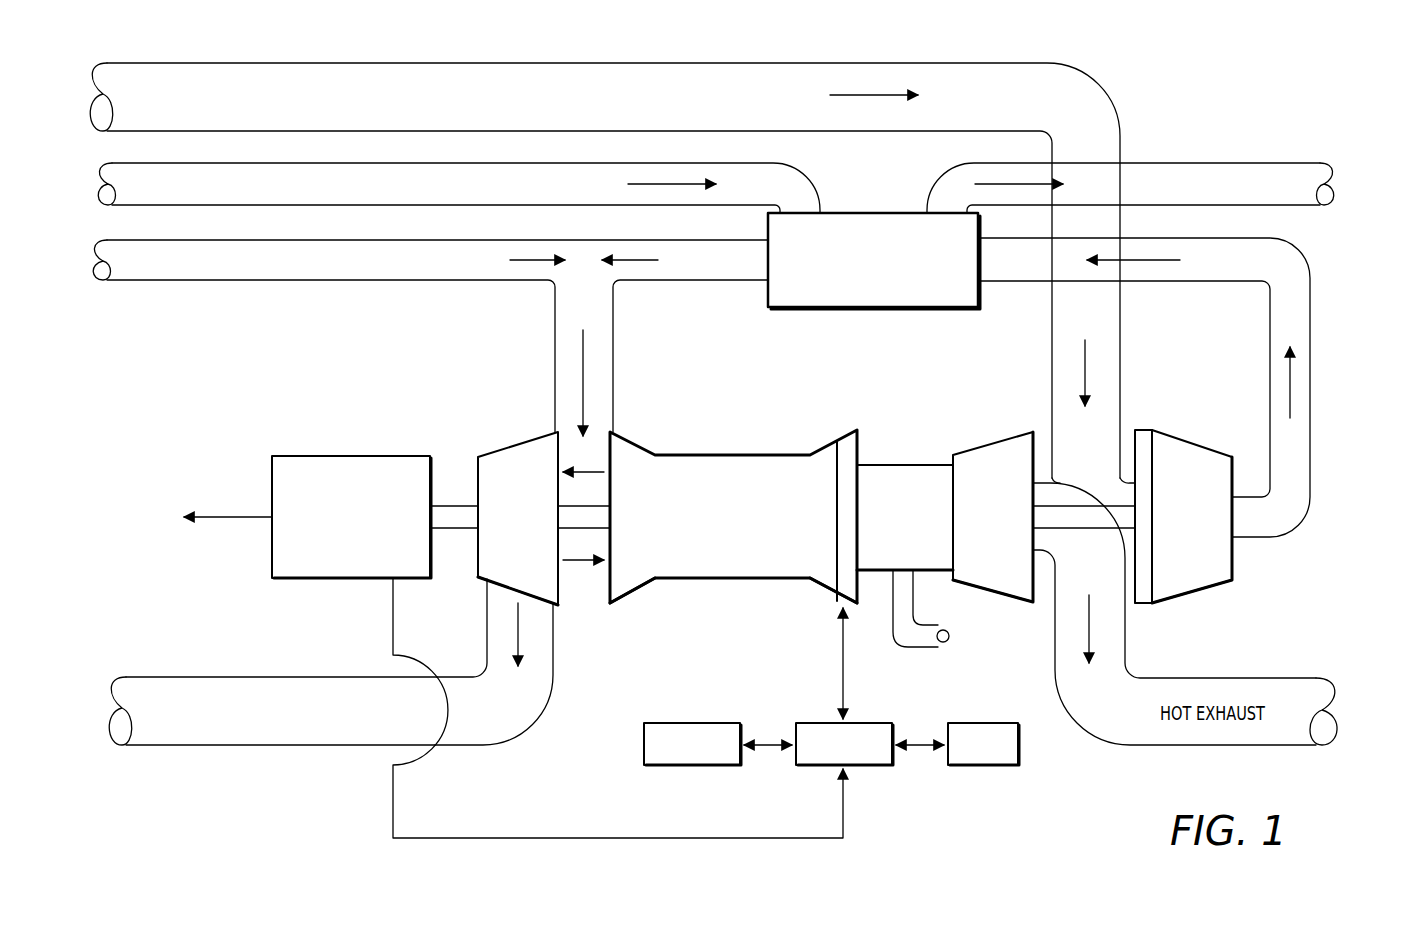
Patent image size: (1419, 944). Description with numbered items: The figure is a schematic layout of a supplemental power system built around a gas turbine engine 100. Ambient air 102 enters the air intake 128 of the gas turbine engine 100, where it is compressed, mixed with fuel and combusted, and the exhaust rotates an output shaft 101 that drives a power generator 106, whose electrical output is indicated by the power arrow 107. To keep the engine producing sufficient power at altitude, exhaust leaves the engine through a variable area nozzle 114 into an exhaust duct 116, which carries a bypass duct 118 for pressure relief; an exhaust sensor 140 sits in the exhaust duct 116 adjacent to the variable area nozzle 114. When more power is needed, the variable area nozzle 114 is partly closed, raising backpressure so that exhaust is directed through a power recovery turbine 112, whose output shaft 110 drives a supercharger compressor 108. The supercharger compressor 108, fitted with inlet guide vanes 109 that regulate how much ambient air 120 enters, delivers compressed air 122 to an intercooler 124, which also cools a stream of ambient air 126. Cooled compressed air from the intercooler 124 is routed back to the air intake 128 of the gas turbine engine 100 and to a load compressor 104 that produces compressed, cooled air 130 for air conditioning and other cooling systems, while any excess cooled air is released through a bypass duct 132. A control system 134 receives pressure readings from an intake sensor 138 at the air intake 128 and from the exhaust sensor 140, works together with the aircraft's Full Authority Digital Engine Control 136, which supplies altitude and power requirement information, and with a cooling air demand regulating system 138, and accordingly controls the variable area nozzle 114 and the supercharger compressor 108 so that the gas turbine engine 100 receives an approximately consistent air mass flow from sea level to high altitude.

The gas turbine engine 100 is at (732, 455).
The output shaft 101 is at (452, 528).
The ambient air 102 is at (300, 280).
The load compressor 104 is at (522, 443).
The power generator 106 is at (352, 579).
The power 107 is at (245, 518).
The supercharger compressor 108 is at (1192, 440).
The inlet guide vanes 109 is at (1143, 606).
The output shaft 110 is at (1083, 528).
The power recovery turbine 112 is at (978, 447).
The variable area nozzle 114 is at (835, 597).
The exhaust duct 116 is at (910, 465).
The bypass duct 118 is at (902, 647).
The ambient air 120 is at (1098, 88).
The compressed air 122 is at (1310, 388).
The intercooler 124 is at (870, 308).
The ambient air 126 is at (322, 205).
The air intake 128 is at (585, 603).
The compressed, cooled air 130 is at (296, 745).
The bypass duct 132 is at (1200, 163).
The control system 134 is at (822, 765).
The Full Authority Digital Engine Control 136 is at (985, 765).
The intake sensor 138 is at (692, 765).
The exhaust sensor 140 is at (862, 560).